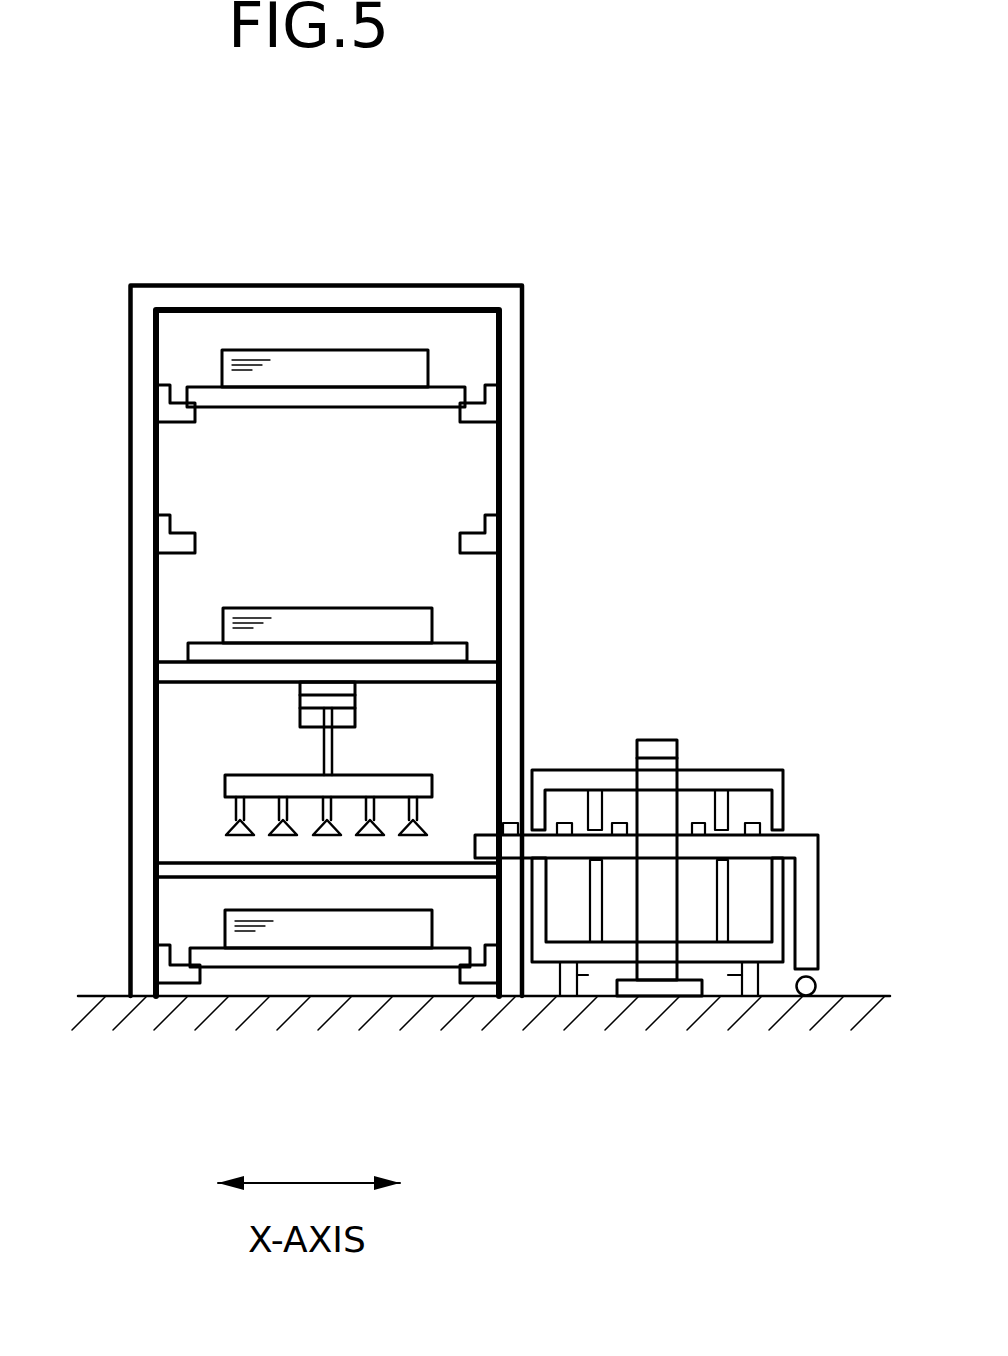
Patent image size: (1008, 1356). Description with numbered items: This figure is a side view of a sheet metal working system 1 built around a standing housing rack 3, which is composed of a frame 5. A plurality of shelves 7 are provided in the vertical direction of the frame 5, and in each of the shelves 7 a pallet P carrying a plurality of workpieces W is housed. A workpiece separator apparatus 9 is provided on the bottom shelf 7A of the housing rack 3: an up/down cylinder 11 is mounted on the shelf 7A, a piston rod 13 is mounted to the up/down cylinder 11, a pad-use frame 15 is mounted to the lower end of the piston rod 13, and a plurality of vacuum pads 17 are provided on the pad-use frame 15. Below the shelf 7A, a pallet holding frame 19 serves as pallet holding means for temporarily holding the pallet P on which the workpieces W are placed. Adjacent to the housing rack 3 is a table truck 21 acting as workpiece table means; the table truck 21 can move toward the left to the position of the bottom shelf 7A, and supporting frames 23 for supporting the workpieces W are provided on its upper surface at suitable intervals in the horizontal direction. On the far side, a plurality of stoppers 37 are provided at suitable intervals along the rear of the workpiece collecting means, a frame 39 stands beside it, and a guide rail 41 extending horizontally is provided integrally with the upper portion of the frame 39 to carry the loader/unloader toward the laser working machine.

The sheet metal working system 1 is at (628, 268).
The housing rack 3 is at (432, 272).
The frame 5 is at (510, 435).
The shelves 7 is at (193, 414).
The bottom shelf 7A is at (487, 670).
The workpiece separator apparatus 9 is at (262, 766).
The up/down cylinder 11 is at (353, 703).
The piston rod 13 is at (322, 747).
The pad-use frame 15 is at (223, 788).
The vacuum pads 17 is at (233, 828).
The pallet holding frame 19 is at (153, 967).
The table truck 21 is at (803, 888).
The supporting frames 23 is at (563, 807).
The stoppers 37 is at (593, 912).
The frame 39 is at (657, 966).
The guide rail 41 is at (653, 750).
The pallet P is at (402, 395).
The workpieces W is at (262, 350).